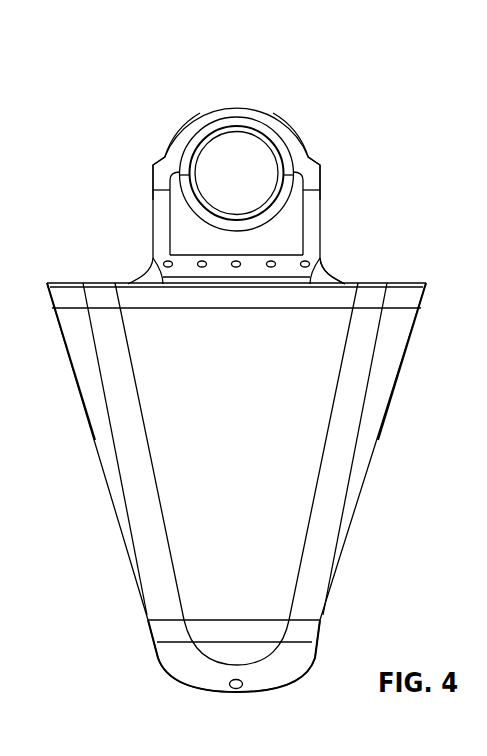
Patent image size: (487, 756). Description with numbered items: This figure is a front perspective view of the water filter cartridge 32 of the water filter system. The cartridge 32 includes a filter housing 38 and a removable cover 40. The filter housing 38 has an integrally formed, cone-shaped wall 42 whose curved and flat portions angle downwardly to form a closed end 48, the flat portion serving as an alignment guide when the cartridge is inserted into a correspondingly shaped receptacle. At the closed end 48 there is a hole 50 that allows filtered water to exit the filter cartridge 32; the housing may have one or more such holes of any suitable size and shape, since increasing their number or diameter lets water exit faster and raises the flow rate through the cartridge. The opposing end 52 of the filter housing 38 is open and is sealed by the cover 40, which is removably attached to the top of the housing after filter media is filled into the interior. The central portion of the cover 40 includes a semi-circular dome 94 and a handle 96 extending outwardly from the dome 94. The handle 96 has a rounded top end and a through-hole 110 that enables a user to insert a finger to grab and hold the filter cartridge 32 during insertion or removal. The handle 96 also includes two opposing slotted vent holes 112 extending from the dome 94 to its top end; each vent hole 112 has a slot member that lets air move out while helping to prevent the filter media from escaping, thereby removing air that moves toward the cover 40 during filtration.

The water filter cartridge 32 is at (261, 146).
The filter housing 38 is at (375, 470).
The removable cover 40 is at (336, 268).
The cone-shaped wall 42 is at (248, 450).
The closed end 48 is at (342, 628).
The hole 50 is at (236, 679).
The opposing end 52 is at (72, 260).
The semi-circular dome 94 is at (138, 277).
The handle 96 is at (152, 175).
The through-hole 110 is at (244, 128).
The slotted vent holes 112 is at (158, 126).